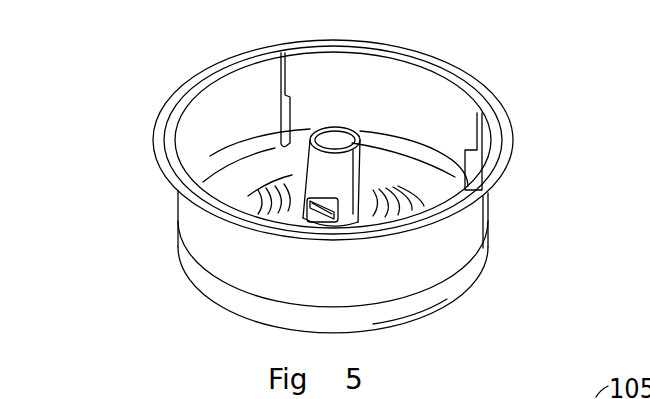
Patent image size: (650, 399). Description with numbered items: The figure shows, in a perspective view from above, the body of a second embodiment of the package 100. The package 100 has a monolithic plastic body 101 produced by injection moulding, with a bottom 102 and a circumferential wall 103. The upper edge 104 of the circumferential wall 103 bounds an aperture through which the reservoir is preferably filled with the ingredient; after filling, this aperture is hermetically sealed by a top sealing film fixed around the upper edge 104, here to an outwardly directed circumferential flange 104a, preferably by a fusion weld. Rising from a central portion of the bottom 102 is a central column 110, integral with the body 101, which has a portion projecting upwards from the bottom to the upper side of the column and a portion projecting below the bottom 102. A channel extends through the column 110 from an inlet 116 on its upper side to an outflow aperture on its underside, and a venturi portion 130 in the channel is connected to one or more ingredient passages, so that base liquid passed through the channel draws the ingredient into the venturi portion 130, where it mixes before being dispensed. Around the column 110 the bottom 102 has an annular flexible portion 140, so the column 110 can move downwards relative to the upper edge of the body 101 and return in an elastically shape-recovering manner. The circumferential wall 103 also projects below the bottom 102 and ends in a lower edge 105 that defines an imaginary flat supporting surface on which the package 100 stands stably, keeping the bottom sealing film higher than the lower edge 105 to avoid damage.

The package 100 is at (520, 182).
The monolithic plastic body 101 is at (200, 238).
The bottom 102 is at (443, 173).
The circumferential wall 103 is at (473, 238).
The upper edge 104 is at (500, 82).
The outwardly directed circumferential flange 104a is at (508, 118).
The lower edge 105 is at (440, 307).
The central column 110 is at (318, 172).
The inlet 116 is at (338, 135).
The venturi portion 130 is at (355, 216).
The annular flexible portion 140 is at (262, 193).